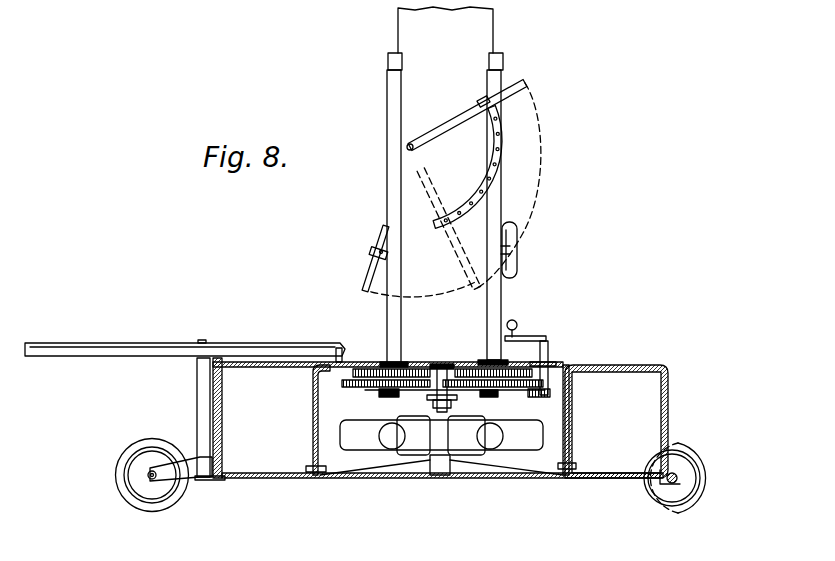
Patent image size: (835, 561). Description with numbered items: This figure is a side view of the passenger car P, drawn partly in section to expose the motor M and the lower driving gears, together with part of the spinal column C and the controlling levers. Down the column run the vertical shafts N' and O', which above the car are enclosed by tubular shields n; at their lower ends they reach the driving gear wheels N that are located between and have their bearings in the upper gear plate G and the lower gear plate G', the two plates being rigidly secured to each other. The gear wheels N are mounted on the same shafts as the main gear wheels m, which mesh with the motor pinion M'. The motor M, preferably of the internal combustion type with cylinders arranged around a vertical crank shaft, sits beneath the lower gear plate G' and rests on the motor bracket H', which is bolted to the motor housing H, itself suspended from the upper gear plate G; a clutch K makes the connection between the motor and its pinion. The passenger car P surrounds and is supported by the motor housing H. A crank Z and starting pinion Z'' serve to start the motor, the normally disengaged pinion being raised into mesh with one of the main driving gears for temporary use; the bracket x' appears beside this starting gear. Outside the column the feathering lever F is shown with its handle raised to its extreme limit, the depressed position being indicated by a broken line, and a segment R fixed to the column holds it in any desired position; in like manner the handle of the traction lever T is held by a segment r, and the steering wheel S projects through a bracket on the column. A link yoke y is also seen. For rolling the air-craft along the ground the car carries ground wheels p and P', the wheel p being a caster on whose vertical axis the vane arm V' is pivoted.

The spinal column C is at (445, 39).
The vertical shaft O' is at (382, 54).
The vertical shaft N' is at (508, 53).
The tubular shield n is at (394, 124).
The feathering lever F is at (526, 82).
The segment R is at (481, 181).
The segment r is at (370, 251).
The traction lever T is at (365, 290).
The steering wheel S is at (517, 250).
The crank Z is at (518, 323).
The bracket x' is at (536, 365).
The starting pinion Z'' is at (542, 403).
The vane arm V' is at (185, 338).
The link yoke y is at (338, 349).
The motor housing H is at (319, 420).
The motor bracket H' is at (442, 478).
The passenger car P is at (613, 421).
The upper gear plate G is at (391, 353).
The driving gear wheel N is at (470, 372).
The main gear wheel m is at (342, 384).
The lower gear plate G' is at (377, 402).
The motor pinion M' is at (427, 405).
The clutch K is at (452, 402).
The motor M is at (441, 435).
The ground wheel p is at (118, 466).
The ground wheel P' is at (686, 478).